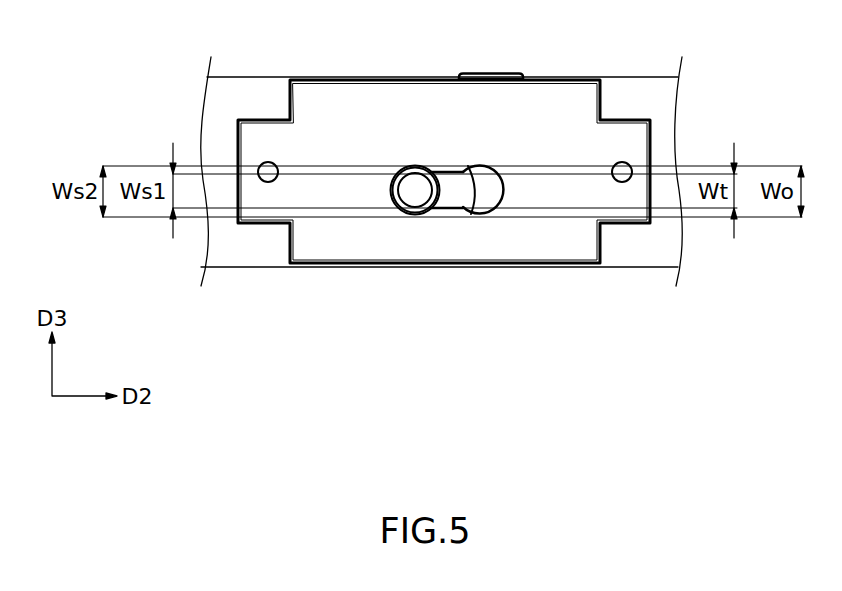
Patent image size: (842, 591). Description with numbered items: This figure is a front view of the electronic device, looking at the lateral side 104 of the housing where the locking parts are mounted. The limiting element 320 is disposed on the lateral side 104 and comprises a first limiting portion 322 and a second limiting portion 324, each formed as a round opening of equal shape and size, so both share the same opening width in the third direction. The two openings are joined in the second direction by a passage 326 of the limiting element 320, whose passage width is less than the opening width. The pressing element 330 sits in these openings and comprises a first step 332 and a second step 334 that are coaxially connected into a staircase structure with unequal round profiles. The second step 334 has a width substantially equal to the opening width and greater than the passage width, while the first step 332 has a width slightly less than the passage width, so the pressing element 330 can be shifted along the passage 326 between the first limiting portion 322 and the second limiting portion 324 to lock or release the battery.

The lateral side 104 is at (253, 98).
The limiting element 320 is at (315, 98).
The first limiting portion 322 is at (391, 191).
The second limiting portion 324 is at (492, 202).
The passage 326 is at (448, 183).
The pressing element 330 is at (439, 264).
The first step 332 is at (436, 209).
The second step 334 is at (427, 201).